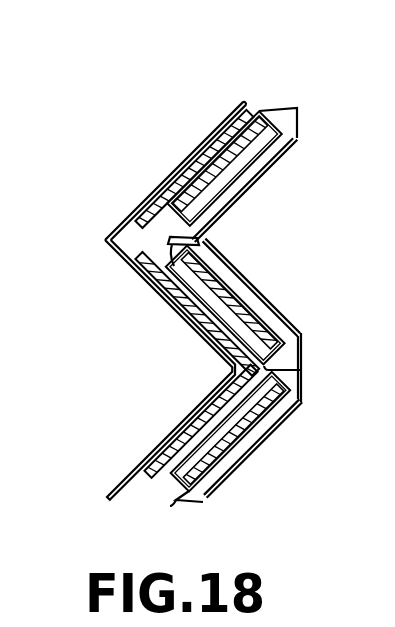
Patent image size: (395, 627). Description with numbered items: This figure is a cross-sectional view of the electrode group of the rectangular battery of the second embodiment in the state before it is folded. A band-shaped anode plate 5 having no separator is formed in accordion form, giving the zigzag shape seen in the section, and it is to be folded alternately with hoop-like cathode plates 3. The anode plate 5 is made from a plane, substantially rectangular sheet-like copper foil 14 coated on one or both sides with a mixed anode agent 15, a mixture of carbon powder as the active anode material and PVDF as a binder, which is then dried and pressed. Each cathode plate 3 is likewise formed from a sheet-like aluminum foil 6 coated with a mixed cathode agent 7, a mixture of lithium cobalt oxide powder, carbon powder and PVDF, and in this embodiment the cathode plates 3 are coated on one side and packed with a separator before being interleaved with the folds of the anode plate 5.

The cathode plate 3 is at (268, 112).
The anode plate 5 is at (168, 173).
The aluminum foil 6 is at (220, 200).
The mixed cathode agent 7 is at (258, 162).
The copper foil 14 is at (130, 213).
The mixed anode agent 15 is at (210, 138).